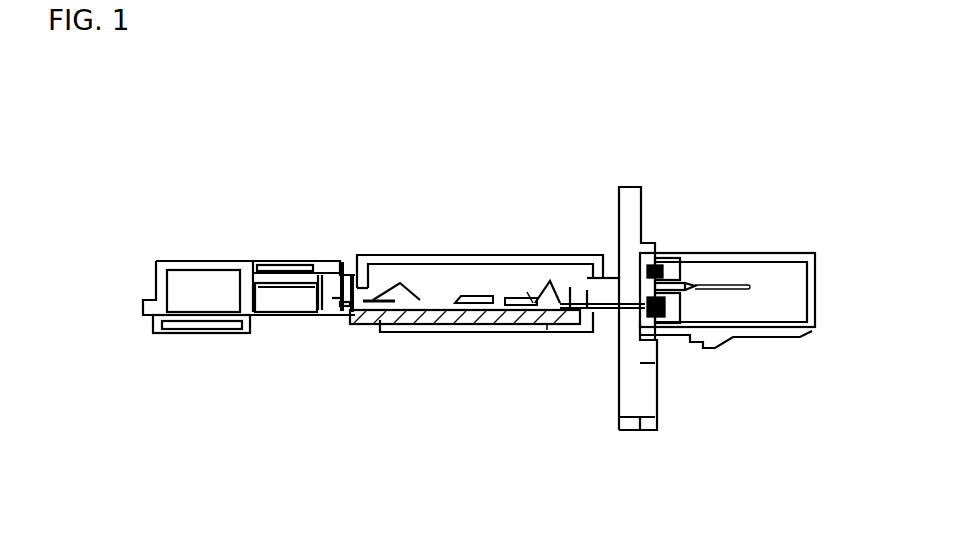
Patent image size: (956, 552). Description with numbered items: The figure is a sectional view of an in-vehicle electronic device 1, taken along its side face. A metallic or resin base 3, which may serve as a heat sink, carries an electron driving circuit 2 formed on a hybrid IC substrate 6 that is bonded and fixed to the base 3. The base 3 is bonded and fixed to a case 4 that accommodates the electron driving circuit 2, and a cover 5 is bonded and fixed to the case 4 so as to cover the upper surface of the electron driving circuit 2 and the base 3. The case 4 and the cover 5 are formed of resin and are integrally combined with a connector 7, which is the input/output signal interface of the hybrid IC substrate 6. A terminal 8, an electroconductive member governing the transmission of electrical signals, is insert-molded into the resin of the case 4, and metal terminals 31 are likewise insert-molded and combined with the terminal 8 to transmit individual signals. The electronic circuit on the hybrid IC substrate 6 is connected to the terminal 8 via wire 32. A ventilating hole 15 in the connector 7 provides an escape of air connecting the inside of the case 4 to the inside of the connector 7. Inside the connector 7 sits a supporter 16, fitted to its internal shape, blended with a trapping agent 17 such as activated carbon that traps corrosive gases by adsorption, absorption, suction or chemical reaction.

The in-vehicle electronic device 1 is at (307, 238).
The electron driving circuit 2 is at (474, 298).
The base 3 is at (427, 331).
The case 4 is at (617, 325).
The cover 5 is at (384, 254).
The hybrid IC substrate 6 is at (441, 286).
The connector 7 is at (755, 254).
The terminal 8 is at (735, 290).
The ventilating hole 15 is at (593, 312).
The supporter 16 is at (657, 268).
The trapping agent 17 is at (671, 203).
The metal terminals 31 is at (547, 326).
The wire 32 is at (528, 291).